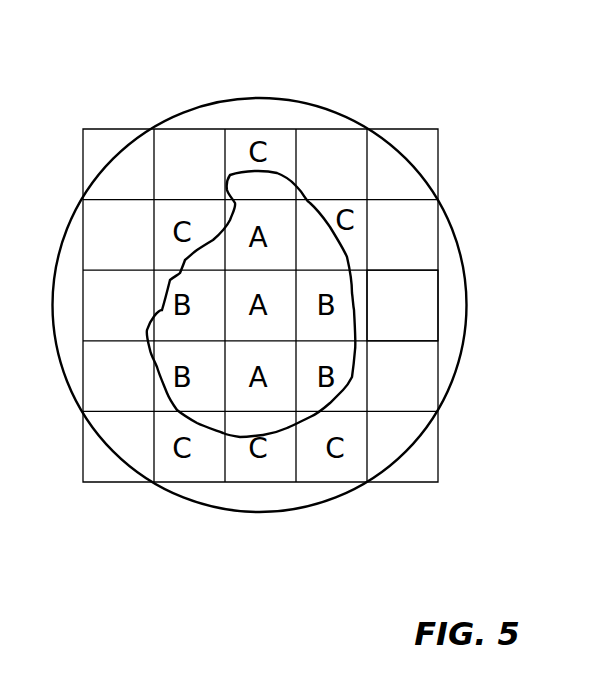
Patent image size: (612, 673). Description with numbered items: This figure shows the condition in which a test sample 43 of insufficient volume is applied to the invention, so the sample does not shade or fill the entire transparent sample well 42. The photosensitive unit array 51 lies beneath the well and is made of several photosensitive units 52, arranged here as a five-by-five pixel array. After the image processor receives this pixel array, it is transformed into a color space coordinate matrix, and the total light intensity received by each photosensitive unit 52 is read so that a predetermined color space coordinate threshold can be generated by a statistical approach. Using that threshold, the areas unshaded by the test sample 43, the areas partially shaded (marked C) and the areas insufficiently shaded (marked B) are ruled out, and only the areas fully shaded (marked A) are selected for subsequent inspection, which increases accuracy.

The transparent sample well 42 is at (260, 97).
The photosensitive unit array 51 is at (403, 129).
The photosensitive unit 52 is at (420, 318).
The test sample 43 is at (280, 432).